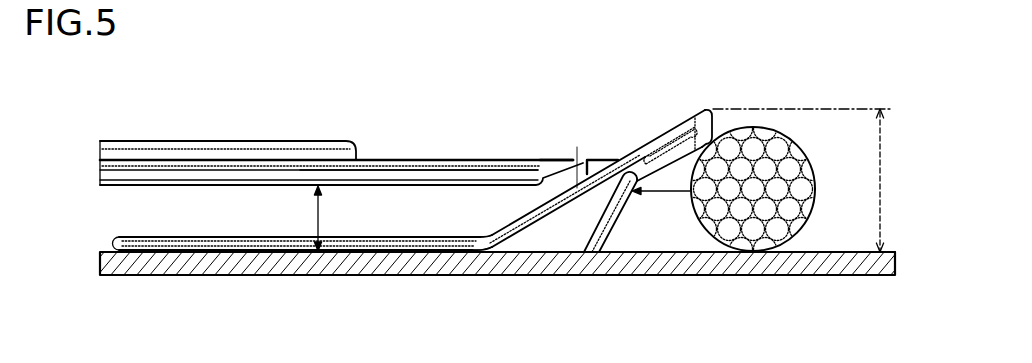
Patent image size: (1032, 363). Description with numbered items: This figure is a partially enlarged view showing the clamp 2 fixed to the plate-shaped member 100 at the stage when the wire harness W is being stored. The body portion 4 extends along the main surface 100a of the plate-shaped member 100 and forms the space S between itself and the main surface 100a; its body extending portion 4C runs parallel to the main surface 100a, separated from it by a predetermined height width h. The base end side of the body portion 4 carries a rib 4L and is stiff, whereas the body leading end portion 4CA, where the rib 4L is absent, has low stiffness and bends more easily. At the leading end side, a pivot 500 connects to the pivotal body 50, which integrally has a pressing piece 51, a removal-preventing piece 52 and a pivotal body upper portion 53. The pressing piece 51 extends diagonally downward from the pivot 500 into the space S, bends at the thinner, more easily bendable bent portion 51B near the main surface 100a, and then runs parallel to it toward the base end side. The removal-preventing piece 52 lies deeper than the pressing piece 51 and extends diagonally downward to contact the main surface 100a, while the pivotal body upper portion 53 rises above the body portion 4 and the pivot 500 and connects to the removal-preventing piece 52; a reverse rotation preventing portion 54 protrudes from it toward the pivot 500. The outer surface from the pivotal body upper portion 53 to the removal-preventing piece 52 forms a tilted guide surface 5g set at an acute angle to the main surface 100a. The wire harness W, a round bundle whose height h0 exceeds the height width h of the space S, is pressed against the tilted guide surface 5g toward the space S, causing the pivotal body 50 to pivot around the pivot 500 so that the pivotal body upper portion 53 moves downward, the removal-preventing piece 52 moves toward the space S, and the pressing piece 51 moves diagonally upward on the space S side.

The clamp 2 is at (96, 132).
The body portion 4 is at (246, 168).
The body extending portion 4C is at (341, 164).
The rib 4L is at (298, 142).
The body leading end portion 4CA is at (409, 175).
The pivot 500 is at (566, 154).
The space S is at (199, 212).
The height width h is at (325, 218).
The pivotal body 50 is at (666, 126).
The pressing piece 51 is at (517, 232).
The bent portion 51B is at (478, 254).
The removal-preventing piece 52 is at (613, 228).
The pivotal body upper portion 53 is at (704, 112).
The reverse rotation preventing portion 54 is at (598, 160).
The tilted guide surface 5g is at (640, 207).
The wire harness W is at (793, 123).
The thickness (height) of the wire harness h0 is at (882, 168).
The plate-shaped member 100 is at (650, 282).
The main surface 100a is at (843, 250).